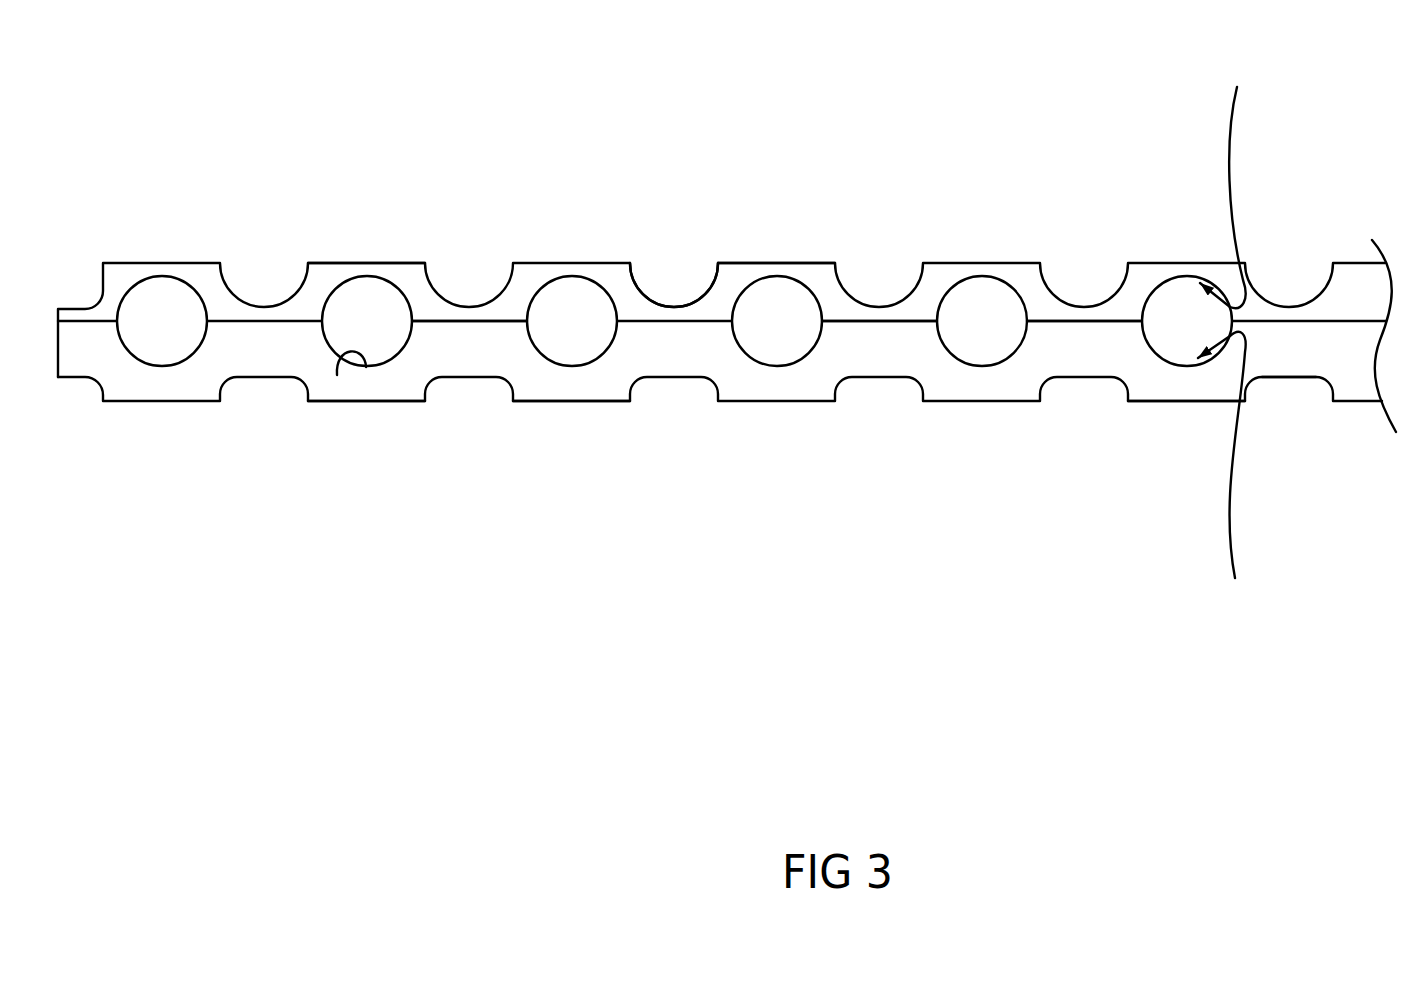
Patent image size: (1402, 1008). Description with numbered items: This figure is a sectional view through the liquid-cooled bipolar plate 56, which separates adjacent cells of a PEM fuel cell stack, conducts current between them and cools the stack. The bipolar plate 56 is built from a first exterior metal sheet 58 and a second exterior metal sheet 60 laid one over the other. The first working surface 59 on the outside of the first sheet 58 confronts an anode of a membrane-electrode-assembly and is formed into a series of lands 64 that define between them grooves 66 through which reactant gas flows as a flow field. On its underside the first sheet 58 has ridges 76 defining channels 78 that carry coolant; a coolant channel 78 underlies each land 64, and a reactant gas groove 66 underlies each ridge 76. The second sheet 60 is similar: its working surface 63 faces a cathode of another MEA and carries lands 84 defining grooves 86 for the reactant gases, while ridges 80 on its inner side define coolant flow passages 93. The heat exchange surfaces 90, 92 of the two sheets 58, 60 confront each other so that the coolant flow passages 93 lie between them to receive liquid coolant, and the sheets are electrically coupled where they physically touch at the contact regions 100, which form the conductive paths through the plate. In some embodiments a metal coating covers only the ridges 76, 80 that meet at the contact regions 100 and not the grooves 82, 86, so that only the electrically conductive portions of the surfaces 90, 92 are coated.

The bipolar plate 56 is at (117, 172).
The first exterior metal sheet 58 is at (1357, 277).
The first working surface 59 is at (307, 258).
The second exterior metal sheet 60 is at (1297, 364).
The working surface 63 is at (577, 404).
The lands 64 is at (783, 259).
The grooves 66 is at (676, 307).
The ridges 76 is at (490, 322).
The channels 78 is at (575, 322).
The ridges 80 is at (1089, 318).
The grooves 82 is at (367, 322).
The lands 84 is at (400, 403).
The grooves 86 is at (337, 375).
The heat exchange surface 90 is at (1226, 181).
The heat exchange surface 92 is at (1228, 475).
The coolant flow passages 93 is at (985, 347).
The contact regions 100 is at (881, 330).